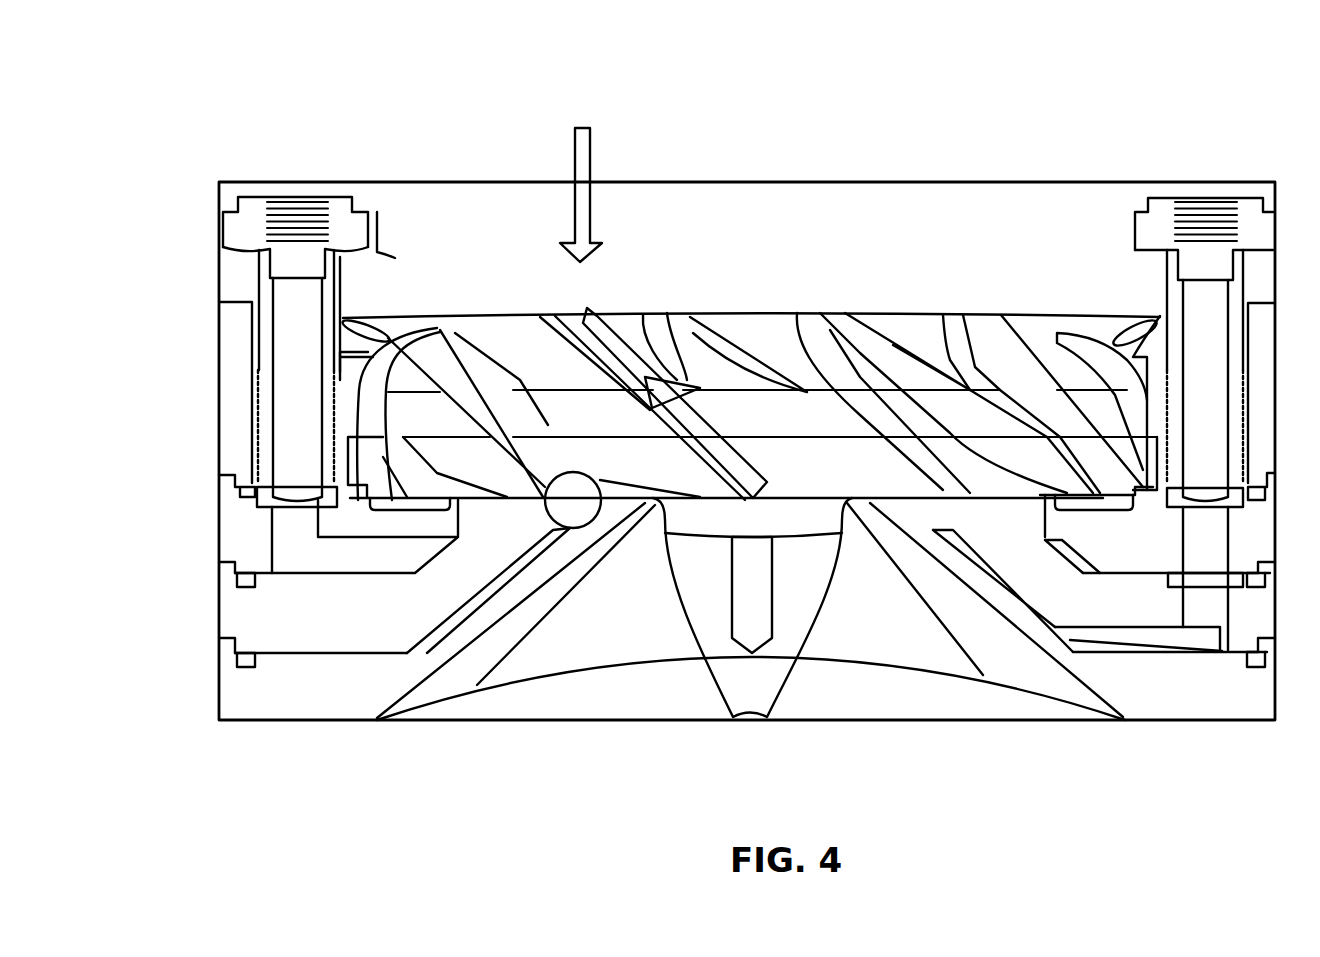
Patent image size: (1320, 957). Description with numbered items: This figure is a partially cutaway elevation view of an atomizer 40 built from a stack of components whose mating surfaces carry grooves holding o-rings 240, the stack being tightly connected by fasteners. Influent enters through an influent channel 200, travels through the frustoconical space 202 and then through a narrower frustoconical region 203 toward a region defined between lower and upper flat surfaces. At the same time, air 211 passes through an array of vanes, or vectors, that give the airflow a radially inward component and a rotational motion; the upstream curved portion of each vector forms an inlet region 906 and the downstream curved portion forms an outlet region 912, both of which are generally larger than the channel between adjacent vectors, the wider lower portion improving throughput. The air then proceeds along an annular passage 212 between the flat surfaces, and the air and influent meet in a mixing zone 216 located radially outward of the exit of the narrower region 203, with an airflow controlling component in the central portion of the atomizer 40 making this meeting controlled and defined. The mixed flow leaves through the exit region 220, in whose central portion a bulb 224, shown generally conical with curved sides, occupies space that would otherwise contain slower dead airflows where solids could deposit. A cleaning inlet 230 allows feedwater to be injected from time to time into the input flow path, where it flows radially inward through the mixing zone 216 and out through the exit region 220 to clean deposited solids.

The atomizer 40 is at (196, 388).
The influent channel 200 is at (1203, 267).
The cleaning inlet 230 is at (297, 262).
The air 211 is at (357, 350).
The mixing zone 216 is at (543, 487).
The annular passage 212 is at (490, 443).
The inlet region 906 is at (767, 333).
The outlet region 912 is at (817, 490).
The bulb 224 is at (693, 620).
The exit region 220 is at (537, 643).
The narrower frustoconical region 203 is at (900, 503).
The frustoconical space 202 is at (1000, 575).
The o-rings 240 is at (236, 664).